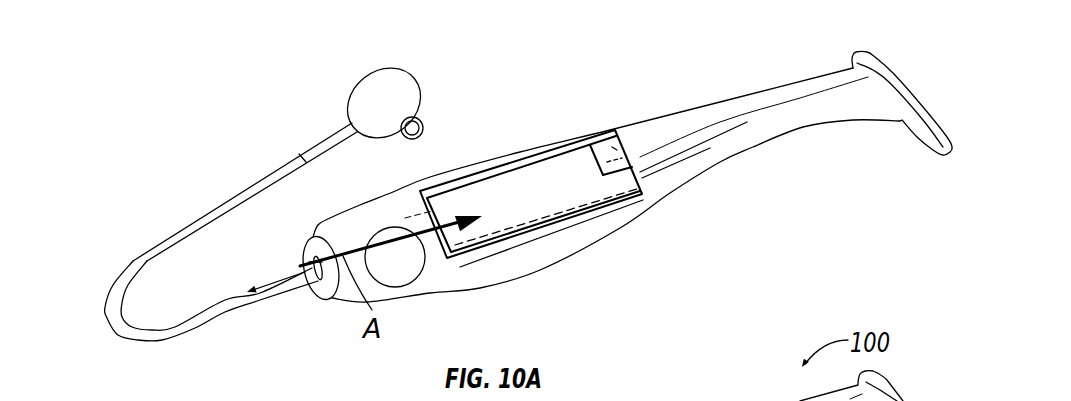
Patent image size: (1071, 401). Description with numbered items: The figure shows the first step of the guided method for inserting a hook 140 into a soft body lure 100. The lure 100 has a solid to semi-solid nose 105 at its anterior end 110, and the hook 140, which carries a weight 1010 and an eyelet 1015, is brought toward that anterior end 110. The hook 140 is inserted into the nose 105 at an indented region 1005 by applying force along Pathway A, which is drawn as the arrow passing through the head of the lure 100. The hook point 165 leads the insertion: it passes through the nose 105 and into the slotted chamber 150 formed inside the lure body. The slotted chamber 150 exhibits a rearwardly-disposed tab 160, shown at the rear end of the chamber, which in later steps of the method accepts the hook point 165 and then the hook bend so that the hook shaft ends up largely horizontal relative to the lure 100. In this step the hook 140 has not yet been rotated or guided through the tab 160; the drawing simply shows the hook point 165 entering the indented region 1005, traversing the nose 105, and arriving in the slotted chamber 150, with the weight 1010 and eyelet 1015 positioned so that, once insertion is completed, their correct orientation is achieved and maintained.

The soft body lure 100 is at (795, 43).
The nose 105 is at (302, 236).
The anterior end 110 is at (110, 367).
The hook 140 is at (241, 196).
The slotted chamber 150 is at (548, 207).
The tab 160 is at (613, 132).
The hook point 165 is at (305, 263).
The indented region 1005 is at (311, 271).
The weight 1010 is at (377, 100).
The eyelet 1015 is at (425, 128).